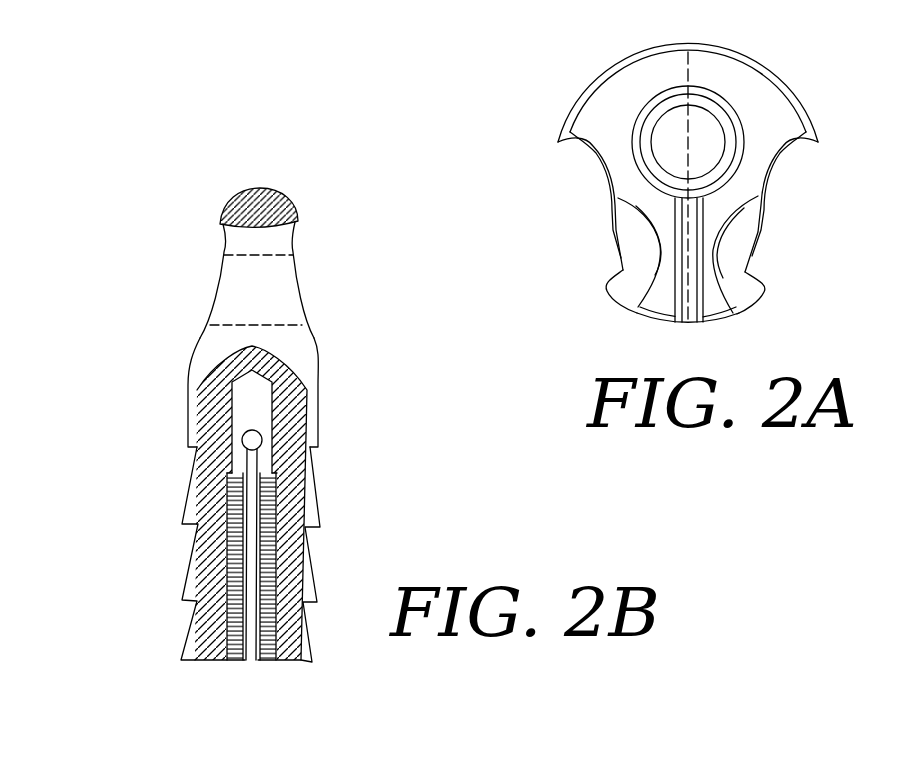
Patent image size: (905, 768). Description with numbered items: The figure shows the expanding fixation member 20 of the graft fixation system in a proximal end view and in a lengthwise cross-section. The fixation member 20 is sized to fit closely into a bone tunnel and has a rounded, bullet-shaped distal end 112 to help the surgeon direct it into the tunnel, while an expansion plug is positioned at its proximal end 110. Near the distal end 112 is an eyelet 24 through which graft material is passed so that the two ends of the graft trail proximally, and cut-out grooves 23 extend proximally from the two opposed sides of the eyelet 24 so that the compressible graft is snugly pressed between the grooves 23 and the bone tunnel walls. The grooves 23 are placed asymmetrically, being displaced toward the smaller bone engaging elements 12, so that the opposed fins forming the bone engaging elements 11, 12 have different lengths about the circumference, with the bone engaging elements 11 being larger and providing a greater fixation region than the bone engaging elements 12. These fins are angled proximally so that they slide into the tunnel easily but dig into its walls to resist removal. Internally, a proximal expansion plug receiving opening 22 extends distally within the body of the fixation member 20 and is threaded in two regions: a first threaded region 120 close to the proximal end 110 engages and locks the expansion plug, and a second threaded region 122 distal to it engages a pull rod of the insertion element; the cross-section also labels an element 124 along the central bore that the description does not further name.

In FIG. 2A, the fixation member 20 is at (599, 51).
In FIG. 2B, the fixation member 20 is at (186, 250).
In FIG. 2A, the bone engaging elements 11 is at (752, 62).
In FIG. 2A, the bone engaging elements 12 is at (725, 316).
In FIG. 2A, the expansion plug receiving opening 22 is at (686, 151).
In FIG. 2B, the expansion plug receiving opening 22 is at (228, 662).
In FIG. 2A, the grooves 23 is at (608, 207).
In FIG. 2A, the eyelet 24 is at (642, 236).
In FIG. 2B, the eyelet 24 is at (281, 287).
In FIG. 2A, the proximal end 110 is at (788, 134).
In FIG. 2B, the proximal end 110 is at (293, 665).
In FIG. 2B, the distal end 112 is at (278, 190).
In FIG. 2B, the first threaded region 120 is at (228, 512).
In FIG. 2B, the second threaded region 122 is at (228, 412).
In FIG. 2B, the pin 124 is at (247, 642).